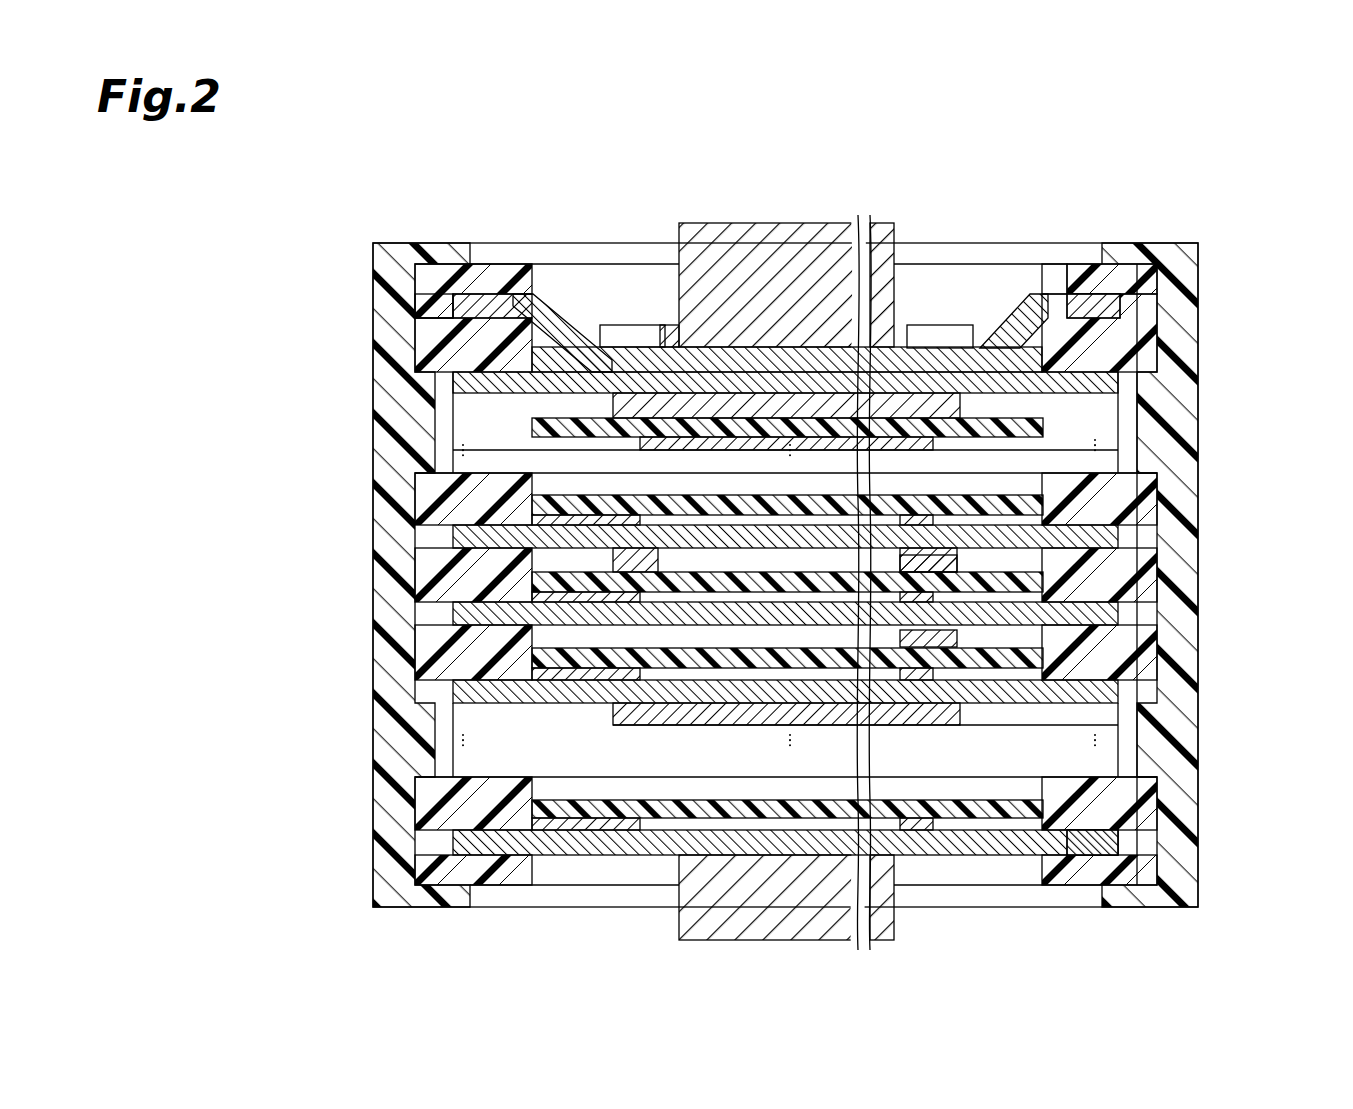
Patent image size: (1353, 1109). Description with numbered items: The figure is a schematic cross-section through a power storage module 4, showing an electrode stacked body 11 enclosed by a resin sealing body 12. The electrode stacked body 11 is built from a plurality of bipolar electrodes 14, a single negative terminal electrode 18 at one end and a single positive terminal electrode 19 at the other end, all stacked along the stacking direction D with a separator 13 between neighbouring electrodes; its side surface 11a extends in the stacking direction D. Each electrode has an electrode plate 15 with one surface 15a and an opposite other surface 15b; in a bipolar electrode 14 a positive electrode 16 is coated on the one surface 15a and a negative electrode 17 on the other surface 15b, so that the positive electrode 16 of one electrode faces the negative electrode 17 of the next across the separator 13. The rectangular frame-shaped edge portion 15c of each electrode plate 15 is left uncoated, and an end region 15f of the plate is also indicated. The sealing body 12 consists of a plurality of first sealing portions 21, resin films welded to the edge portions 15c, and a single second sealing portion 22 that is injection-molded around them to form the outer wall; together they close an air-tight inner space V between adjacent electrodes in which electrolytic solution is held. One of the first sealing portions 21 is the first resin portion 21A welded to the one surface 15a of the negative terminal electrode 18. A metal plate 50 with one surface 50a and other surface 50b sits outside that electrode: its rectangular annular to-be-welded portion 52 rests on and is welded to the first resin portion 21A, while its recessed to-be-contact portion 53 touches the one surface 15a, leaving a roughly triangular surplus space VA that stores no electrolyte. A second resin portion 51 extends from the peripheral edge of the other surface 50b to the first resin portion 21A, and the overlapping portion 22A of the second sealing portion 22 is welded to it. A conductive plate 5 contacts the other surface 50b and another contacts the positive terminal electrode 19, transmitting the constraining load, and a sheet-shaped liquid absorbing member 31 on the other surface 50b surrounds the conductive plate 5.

The power storage module 4 is at (402, 195).
The conductive plate 5 is at (750, 245).
The electrode stacked body 11 is at (958, 310).
The side surface 11a is at (445, 450).
The sealing body 12 is at (1205, 358).
The separator 13 is at (1040, 420).
The bipolar electrode 14 is at (292, 478).
The electrode plate 15 is at (453, 382).
The one surface 15a is at (1025, 300).
The other surface 15b is at (1060, 400).
The edge portion 15c is at (1000, 545).
The piezoelectric layer end 15f is at (1015, 855).
The positive electrode 16 is at (560, 505).
The negative electrode 17 is at (613, 405).
The negative terminal electrode 18 is at (292, 372).
The positive terminal electrode 19 is at (292, 820).
The first sealing portion 21 is at (440, 575).
The first resin portion 21A is at (440, 350).
The second sealing portion 22 is at (395, 745).
The overlapping portion 22A is at (445, 264).
The liquid absorbing member 31 is at (620, 325).
The metal plate 50 is at (560, 310).
The one surface 50a is at (812, 350).
The other surface 50b is at (770, 340).
The second resin portion 51 is at (497, 264).
The to-be-welded portion 52 is at (518, 264).
The to-be-contact portion 53 is at (665, 330).
The inner space V is at (1020, 560).
The surplus space VA is at (540, 352).
The stacking direction D is at (215, 512).